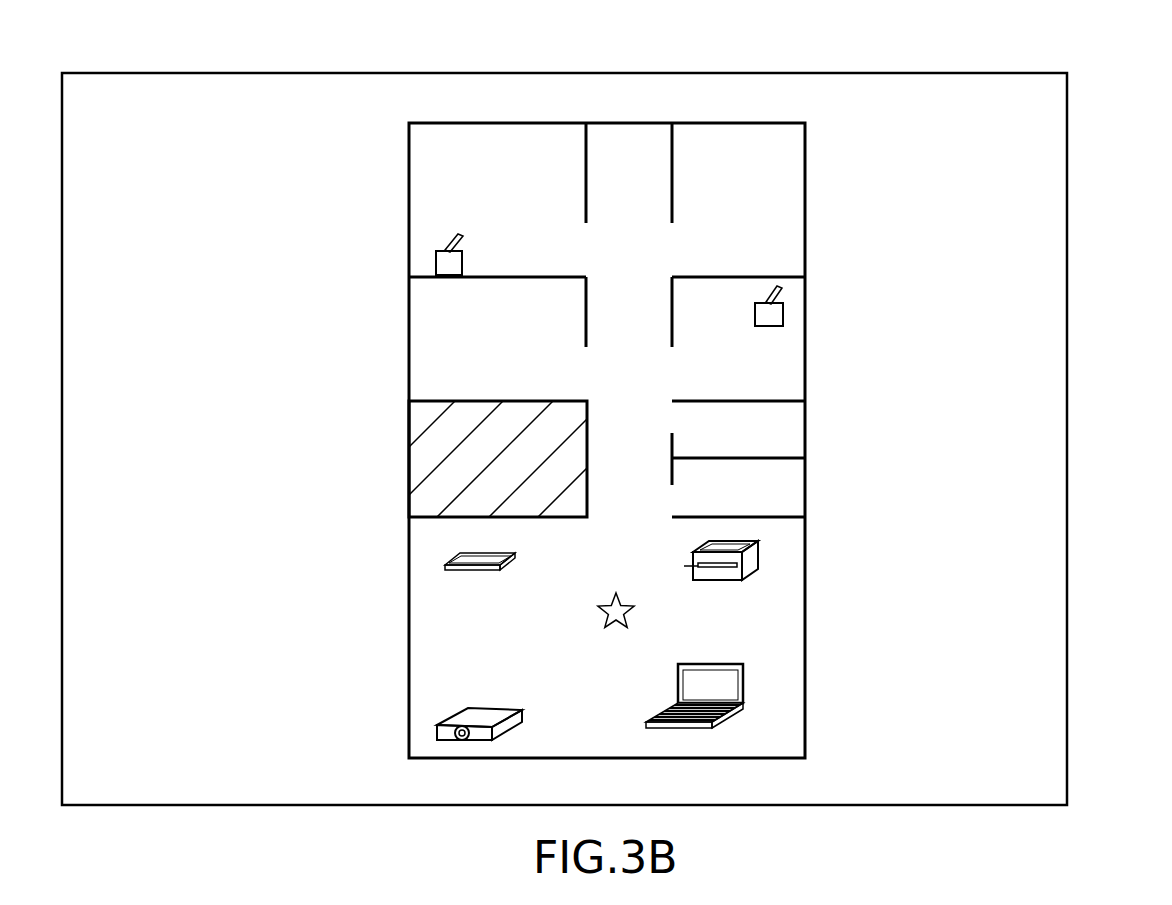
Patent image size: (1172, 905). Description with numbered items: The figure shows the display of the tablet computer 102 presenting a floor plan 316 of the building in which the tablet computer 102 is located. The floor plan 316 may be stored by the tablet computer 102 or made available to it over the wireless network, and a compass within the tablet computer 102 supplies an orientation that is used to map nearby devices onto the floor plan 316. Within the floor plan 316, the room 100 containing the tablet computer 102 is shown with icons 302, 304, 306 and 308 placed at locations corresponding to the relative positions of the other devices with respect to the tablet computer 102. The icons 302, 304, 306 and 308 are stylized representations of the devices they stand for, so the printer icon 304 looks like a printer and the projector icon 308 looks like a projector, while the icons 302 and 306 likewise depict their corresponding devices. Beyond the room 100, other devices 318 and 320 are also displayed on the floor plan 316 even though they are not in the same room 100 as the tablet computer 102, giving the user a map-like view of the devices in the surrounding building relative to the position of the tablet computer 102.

The tablet computer 102 is at (1068, 59).
The floor plan 316 is at (808, 373).
The other device 318 is at (463, 263).
The other device 320 is at (753, 310).
The icon 302 is at (505, 562).
The printer icon 304 is at (788, 552).
The icon 306 is at (502, 710).
The projector icon 308 is at (742, 690).
The room 100 is at (790, 621).